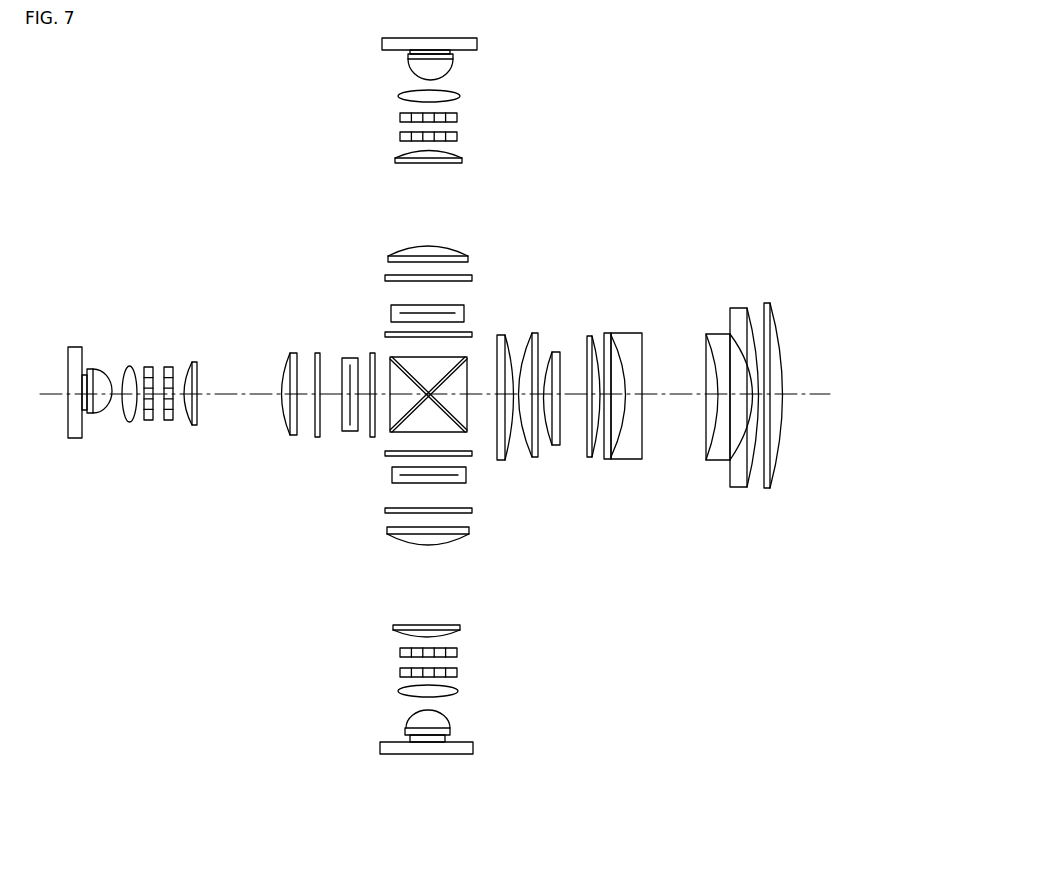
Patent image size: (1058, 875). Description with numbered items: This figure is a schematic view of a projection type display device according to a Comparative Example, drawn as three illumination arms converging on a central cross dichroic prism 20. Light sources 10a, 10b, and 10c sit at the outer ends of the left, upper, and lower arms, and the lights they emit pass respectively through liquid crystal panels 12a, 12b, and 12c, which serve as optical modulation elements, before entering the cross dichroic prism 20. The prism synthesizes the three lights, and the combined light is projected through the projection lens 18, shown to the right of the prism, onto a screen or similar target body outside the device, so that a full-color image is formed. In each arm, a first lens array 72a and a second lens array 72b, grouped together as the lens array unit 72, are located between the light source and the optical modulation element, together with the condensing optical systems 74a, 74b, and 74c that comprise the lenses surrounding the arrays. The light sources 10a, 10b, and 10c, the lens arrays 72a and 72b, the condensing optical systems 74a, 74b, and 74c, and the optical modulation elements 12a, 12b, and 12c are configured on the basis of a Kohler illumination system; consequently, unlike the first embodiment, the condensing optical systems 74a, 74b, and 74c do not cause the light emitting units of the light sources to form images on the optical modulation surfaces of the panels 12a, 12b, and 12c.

The light source 10a is at (72, 438).
The light source 10b is at (477, 42).
The light source 10c is at (443, 755).
The liquid crystal panel 12a is at (348, 432).
The liquid crystal panel 12b is at (388, 310).
The liquid crystal panel 12c is at (400, 484).
The projection lens 18 is at (792, 482).
The cross dichroic prism 20 is at (455, 383).
The lens array unit 72 is at (300, 92).
The first lens array 72a is at (400, 117).
The second lens array 72b is at (400, 137).
The condensing optical system 74a is at (280, 367).
The condensing optical system 74b is at (450, 66).
The condensing optical system 74c is at (457, 545).